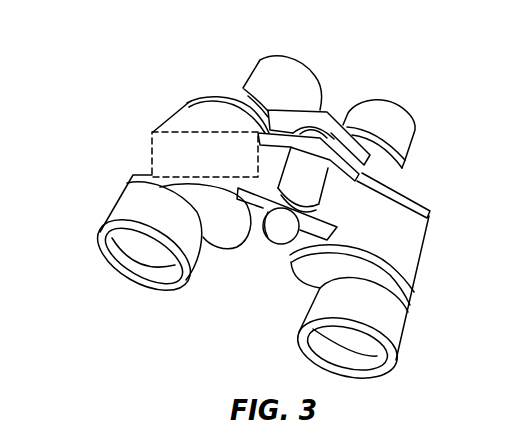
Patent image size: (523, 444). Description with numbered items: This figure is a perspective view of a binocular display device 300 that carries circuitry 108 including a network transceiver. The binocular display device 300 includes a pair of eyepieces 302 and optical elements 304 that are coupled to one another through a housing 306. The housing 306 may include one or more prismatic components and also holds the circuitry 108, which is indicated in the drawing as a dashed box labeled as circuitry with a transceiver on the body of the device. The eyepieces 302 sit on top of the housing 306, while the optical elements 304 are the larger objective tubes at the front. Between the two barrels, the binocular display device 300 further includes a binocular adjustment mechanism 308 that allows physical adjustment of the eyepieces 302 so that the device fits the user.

The binocular display device 300 is at (108, 44).
The eyepieces 302 is at (373, 100).
The optical elements 304 is at (302, 315).
The housing 306 is at (195, 118).
The binocular adjustment mechanism 308 is at (279, 240).
The circuitry 108 is at (152, 132).